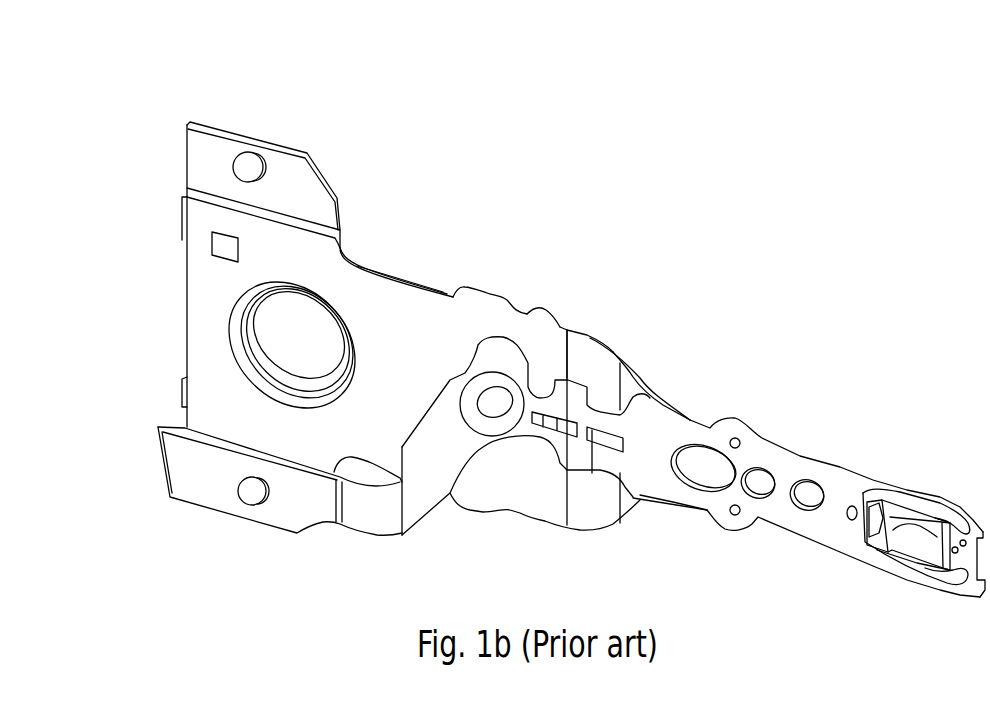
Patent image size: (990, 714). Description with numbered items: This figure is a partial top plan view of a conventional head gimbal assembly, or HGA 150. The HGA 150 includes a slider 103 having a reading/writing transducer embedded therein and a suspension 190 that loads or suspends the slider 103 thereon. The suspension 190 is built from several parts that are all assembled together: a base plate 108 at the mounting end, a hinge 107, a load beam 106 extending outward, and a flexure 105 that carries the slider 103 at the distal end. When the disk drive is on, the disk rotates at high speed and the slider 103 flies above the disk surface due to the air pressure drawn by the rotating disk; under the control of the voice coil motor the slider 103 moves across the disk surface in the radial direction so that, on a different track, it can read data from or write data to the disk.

The HGA 150 is at (250, 79).
The suspension 190 is at (792, 242).
The base plate 108 is at (543, 313).
The hinge 107 is at (580, 347).
The load beam 106 is at (632, 390).
The flexure 105 is at (768, 462).
The slider 103 is at (912, 545).